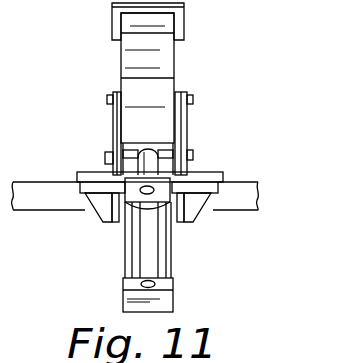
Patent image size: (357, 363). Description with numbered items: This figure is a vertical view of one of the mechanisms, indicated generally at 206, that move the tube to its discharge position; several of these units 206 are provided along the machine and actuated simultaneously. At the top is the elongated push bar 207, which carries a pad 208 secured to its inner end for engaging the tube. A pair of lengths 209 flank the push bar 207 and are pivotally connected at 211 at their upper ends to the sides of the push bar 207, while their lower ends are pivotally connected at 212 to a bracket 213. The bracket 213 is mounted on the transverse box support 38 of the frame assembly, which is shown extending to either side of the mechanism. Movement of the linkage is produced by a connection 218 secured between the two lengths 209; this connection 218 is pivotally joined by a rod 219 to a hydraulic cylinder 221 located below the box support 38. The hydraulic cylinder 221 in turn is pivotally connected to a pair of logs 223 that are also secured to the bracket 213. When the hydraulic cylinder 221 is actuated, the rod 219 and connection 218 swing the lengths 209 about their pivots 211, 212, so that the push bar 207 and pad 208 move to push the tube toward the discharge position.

The tube moving mechanism 206 is at (215, 97).
The push bar 207 is at (174, 60).
The pad 208 is at (184, 24).
The lengths 209 is at (113, 119).
The pivotal connection 211 is at (109, 98).
The pivotal connection 212 is at (106, 157).
The bracket 213 is at (224, 177).
The connection 218 is at (158, 166).
The rod 219 is at (176, 165).
The hydraulic cylinder 221 is at (163, 261).
The logs 223 is at (100, 207).
The box support 38 is at (247, 203).